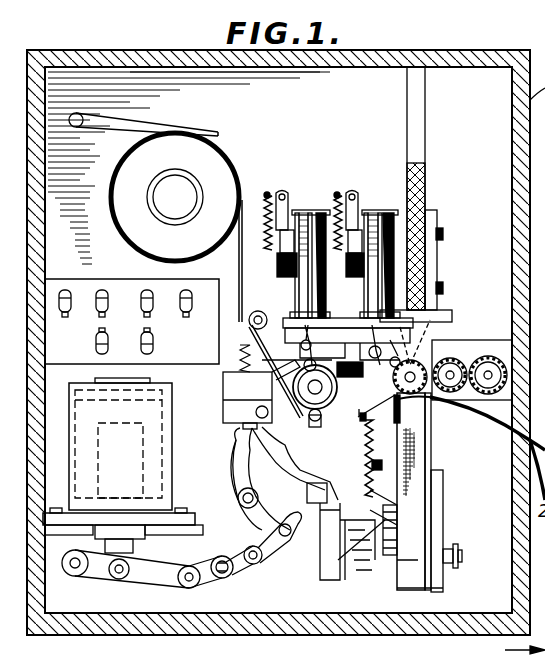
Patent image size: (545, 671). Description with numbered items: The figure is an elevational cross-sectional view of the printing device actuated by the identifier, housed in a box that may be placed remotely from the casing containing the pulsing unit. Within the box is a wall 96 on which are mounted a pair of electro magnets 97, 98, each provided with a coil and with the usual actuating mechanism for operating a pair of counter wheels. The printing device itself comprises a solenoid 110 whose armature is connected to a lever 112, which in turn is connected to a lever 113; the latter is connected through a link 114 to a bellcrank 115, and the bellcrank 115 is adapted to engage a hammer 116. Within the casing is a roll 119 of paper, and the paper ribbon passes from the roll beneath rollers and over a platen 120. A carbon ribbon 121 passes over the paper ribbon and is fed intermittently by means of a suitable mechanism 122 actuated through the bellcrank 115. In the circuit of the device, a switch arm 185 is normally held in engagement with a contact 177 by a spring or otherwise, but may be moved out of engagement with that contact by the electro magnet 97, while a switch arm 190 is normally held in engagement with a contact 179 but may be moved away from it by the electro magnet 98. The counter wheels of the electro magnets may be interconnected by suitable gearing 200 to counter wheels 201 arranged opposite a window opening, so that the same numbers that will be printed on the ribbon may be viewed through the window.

The wall 96 is at (440, 228).
The electro magnet 97 is at (425, 220).
The electro magnet 98 is at (330, 200).
The solenoid 110 is at (155, 450).
The lever 112 is at (172, 583).
The lever 113 is at (248, 578).
The link 114 is at (245, 520).
The bellcrank 115 is at (232, 465).
The hammer 116 is at (300, 473).
The roll of paper 119 is at (208, 168).
The platen 120 is at (430, 410).
The carbon ribbon 121 is at (415, 498).
The mechanism 122 is at (448, 564).
The contact 177 is at (262, 205).
The contact 179 is at (400, 250).
The switch arm 185 is at (262, 312).
The switch arm 190 is at (362, 203).
The gearing 200 is at (455, 405).
The counter wheels 201 is at (488, 355).